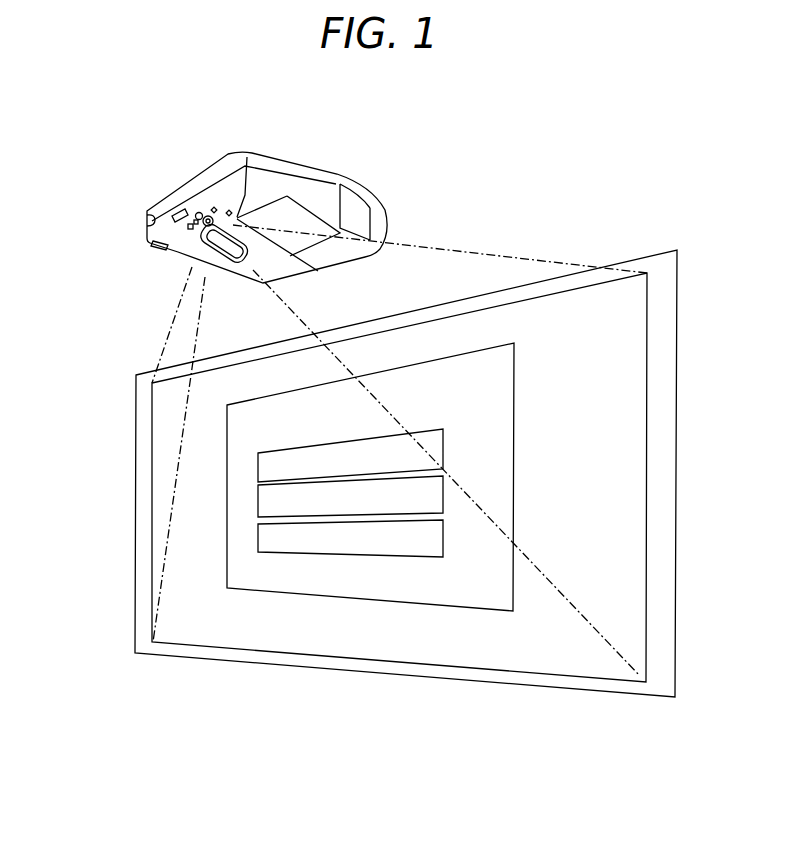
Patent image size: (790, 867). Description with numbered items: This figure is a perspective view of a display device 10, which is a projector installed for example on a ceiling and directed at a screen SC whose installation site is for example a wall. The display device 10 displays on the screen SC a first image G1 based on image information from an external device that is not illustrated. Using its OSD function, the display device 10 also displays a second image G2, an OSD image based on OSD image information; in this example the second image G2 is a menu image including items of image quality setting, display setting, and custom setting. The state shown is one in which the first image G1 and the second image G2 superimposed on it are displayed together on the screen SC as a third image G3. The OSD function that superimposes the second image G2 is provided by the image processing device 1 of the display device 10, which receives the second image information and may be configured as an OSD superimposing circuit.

The display device 10 is at (310, 170).
The image processing device 1 is at (233, 225).
The screen SC is at (143, 374).
The first image G1 is at (262, 656).
The second image G2 is at (346, 606).
The third image G3 is at (399, 511).